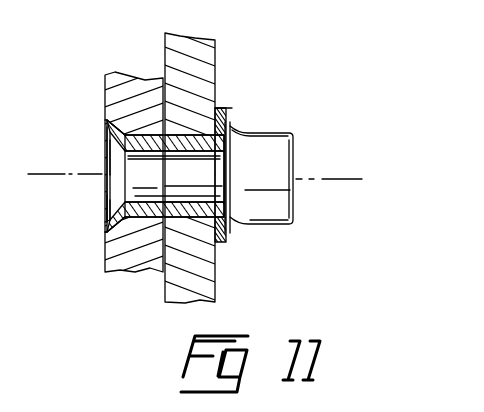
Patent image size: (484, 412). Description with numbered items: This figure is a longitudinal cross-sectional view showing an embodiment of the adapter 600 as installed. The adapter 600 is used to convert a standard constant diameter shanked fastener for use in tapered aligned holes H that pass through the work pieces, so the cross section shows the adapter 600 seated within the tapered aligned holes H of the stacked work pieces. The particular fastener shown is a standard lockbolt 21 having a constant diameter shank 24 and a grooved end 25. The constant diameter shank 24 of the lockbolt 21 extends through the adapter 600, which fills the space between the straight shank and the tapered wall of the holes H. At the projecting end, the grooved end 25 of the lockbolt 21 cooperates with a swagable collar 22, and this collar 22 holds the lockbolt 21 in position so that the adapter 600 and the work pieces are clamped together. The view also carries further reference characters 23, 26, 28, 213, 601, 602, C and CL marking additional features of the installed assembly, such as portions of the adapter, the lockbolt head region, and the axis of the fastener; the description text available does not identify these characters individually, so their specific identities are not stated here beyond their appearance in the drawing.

The lockbolt 21 is at (106, 140).
The swagable collar 22 is at (293, 133).
The sleeve flange 23 is at (107, 165).
The constant diameter shank 24 is at (165, 176).
The grooved end 25 is at (230, 172).
The washer face 26 is at (229, 109).
The washer 28 is at (222, 243).
The flange lip 213 is at (109, 209).
The adapter 600 is at (154, 218).
The sleeve bore 601 is at (219, 197).
The countersink edge 602 is at (108, 220).
The countersink C is at (108, 126).
The tapered aligned holes H is at (192, 215).
The centerline CL is at (303, 180).